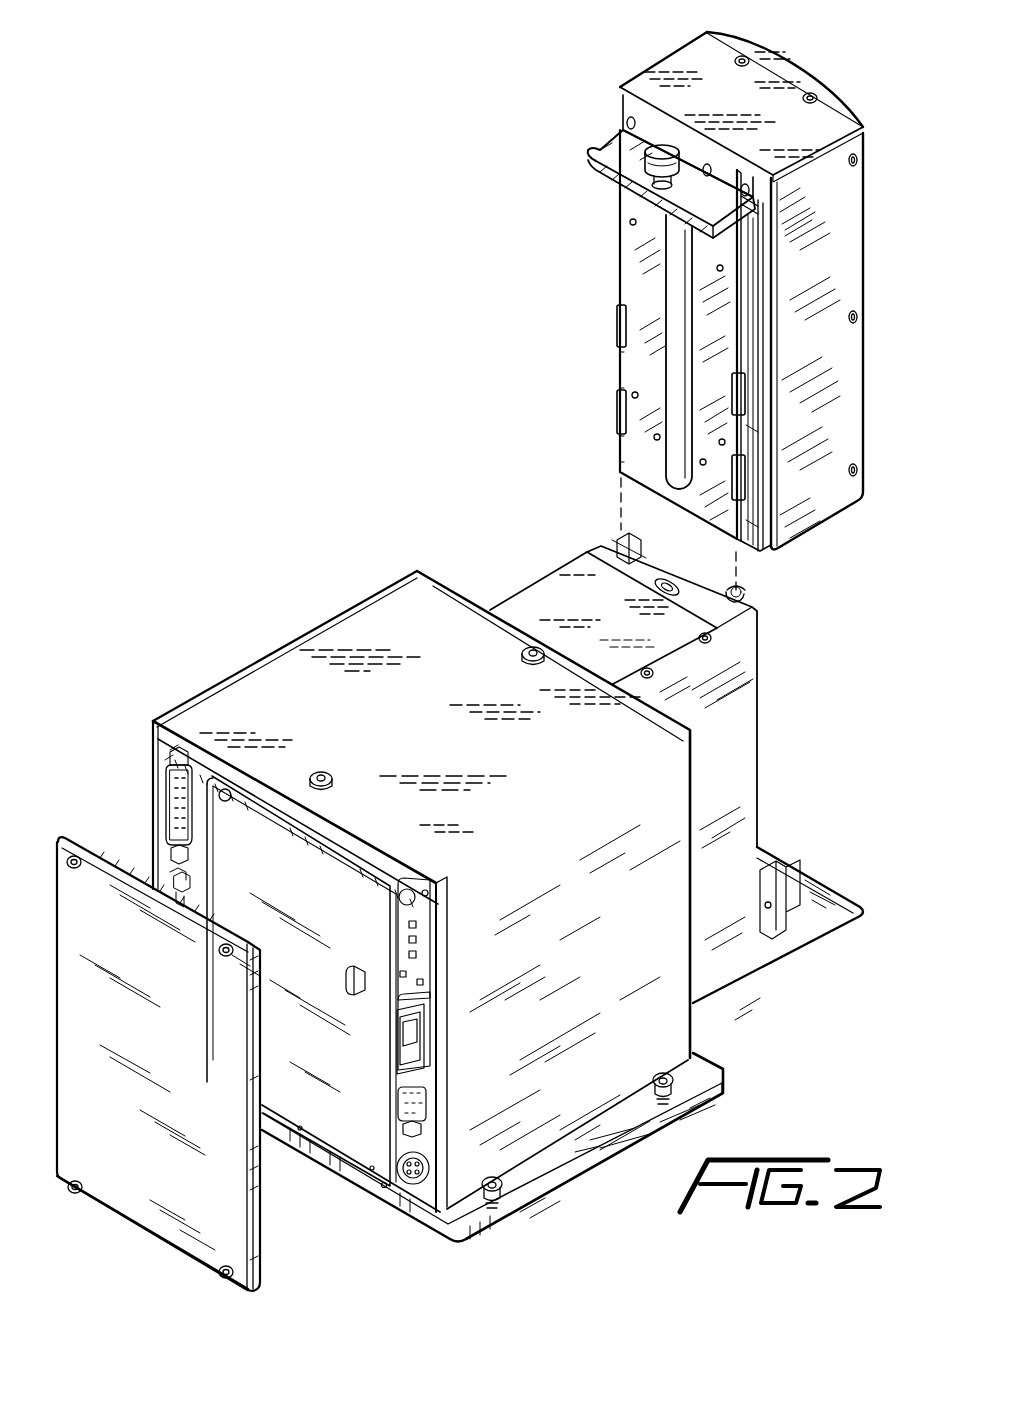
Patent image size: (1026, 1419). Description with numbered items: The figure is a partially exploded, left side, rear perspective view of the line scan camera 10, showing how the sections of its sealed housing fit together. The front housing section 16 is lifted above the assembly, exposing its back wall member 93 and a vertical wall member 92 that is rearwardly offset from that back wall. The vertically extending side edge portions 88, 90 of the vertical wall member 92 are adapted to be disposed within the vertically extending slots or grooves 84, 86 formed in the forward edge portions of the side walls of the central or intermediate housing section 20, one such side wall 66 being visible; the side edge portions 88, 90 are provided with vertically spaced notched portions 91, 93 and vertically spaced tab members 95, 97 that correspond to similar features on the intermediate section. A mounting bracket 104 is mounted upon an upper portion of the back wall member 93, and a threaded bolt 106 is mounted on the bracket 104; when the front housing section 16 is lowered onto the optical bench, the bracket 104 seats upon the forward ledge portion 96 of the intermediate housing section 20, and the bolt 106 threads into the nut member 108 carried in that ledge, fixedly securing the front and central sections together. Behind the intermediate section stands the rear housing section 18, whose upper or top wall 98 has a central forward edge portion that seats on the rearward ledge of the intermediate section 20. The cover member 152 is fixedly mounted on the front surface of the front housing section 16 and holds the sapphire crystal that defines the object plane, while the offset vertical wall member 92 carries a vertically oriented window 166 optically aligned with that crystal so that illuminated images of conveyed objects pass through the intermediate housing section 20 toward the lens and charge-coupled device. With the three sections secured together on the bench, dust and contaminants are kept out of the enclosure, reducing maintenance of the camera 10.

The line scan camera 10 is at (404, 418).
The front housing section 16 is at (692, 296).
The rear housing section 18 is at (508, 906).
The central or intermediate housing section 20 is at (545, 592).
The side wall 66 is at (733, 791).
The vertically extending slot or groove 84 is at (620, 540).
The vertically extending slot or groove 86 is at (746, 600).
The side edge portion 88 is at (618, 282).
The side edge portion 90 is at (775, 290).
The notched portion 91 is at (620, 322).
The vertical wall member 92 is at (713, 336).
The back wall member 93 is at (757, 192).
The tab member 95 is at (620, 378).
The forward ledge portion 96 is at (633, 565).
The tab member 97 is at (745, 437).
The upper or top wall 98 is at (403, 738).
The mounting bracket 104 is at (610, 156).
The threaded bolt 106 is at (658, 152).
The threaded nut member 108 is at (750, 585).
The cover member 152 is at (795, 78).
The vertically oriented window 166 is at (666, 362).